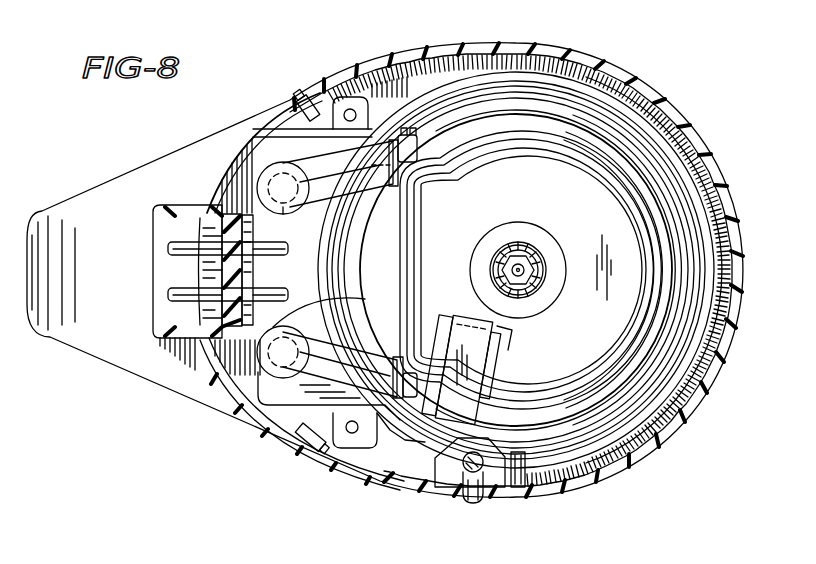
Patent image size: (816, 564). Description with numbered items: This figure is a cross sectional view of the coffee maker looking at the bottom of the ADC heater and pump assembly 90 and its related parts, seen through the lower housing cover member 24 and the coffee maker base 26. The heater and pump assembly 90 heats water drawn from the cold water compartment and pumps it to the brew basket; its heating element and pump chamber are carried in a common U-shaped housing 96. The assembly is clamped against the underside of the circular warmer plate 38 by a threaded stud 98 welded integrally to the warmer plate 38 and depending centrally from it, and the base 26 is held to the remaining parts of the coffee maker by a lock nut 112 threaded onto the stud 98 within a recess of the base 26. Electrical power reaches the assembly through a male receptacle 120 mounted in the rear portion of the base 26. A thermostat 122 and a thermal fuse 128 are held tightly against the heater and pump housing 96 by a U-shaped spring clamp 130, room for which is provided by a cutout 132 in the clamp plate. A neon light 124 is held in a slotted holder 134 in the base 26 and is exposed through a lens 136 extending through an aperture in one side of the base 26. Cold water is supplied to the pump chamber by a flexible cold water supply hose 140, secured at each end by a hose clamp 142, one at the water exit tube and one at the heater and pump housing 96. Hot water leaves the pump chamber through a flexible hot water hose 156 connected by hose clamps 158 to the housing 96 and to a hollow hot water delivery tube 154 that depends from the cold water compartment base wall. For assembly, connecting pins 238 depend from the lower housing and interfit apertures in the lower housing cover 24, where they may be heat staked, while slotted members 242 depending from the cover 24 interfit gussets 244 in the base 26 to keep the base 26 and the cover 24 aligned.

The lower housing cover member 24 is at (78, 207).
The coffee maker base 26 is at (443, 50).
The warmer plate 38 is at (610, 90).
The ADC heater and pump assembly 90 is at (553, 113).
The U-shaped housing 96 is at (491, 120).
The threaded stud 98 is at (515, 252).
The lock nut 112 is at (534, 256).
The male receptacle 120 is at (216, 208).
The thermostat 122 is at (442, 318).
The neon light 124 is at (495, 493).
The thermal fuse 128 is at (418, 430).
The U-shaped spring clamp 130 is at (492, 352).
The cutout 132 is at (512, 342).
The slotted holder 134 is at (457, 490).
The lens 136 is at (477, 508).
The cold water supply hose 140 is at (318, 160).
The hose clamp 142 is at (264, 146).
The hot water delivery tube 154 is at (236, 416).
The hot water hose 156 is at (312, 372).
The hose clamps 158 is at (397, 320).
The connecting pins 238 is at (350, 108).
The slotted members 242 is at (318, 92).
The gussets 244 is at (310, 450).